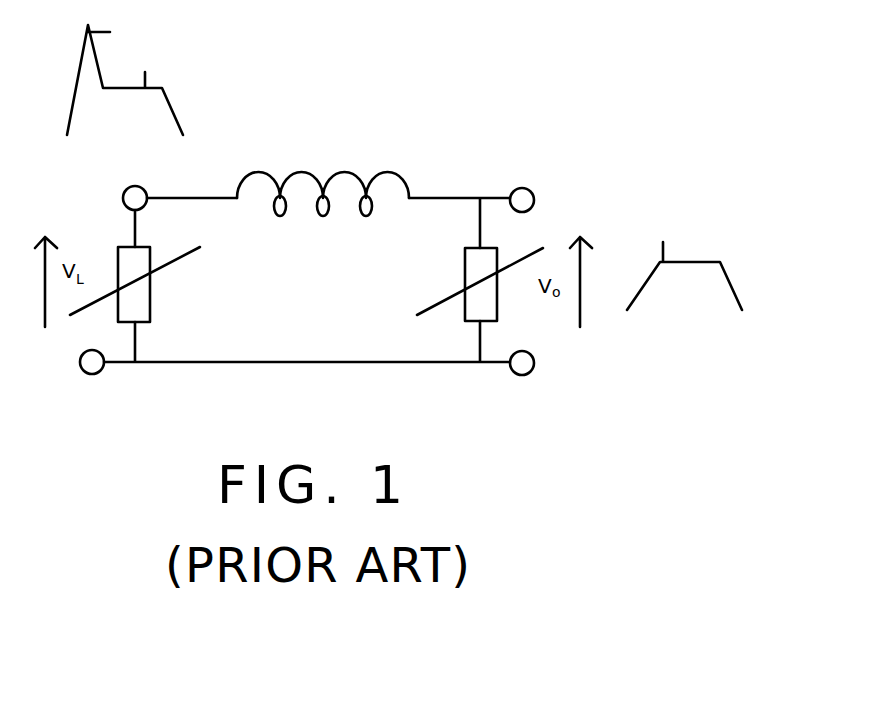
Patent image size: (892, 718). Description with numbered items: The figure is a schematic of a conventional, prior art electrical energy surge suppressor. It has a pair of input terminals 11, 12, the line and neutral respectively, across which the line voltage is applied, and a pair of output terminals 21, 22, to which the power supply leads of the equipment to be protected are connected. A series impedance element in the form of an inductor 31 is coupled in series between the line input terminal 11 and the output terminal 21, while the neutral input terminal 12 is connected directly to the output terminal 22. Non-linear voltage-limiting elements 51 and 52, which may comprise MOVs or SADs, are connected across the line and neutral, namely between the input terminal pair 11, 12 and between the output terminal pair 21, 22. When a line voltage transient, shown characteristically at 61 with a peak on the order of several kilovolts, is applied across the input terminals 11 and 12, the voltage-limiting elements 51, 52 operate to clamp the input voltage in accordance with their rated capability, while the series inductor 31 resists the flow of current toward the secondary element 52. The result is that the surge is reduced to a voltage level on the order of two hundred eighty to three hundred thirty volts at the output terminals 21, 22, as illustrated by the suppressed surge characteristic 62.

The input terminal 11 is at (123, 189).
The input terminal 12 is at (92, 375).
The output terminal 21 is at (522, 188).
The output terminal 22 is at (535, 363).
The inductor 31 is at (333, 172).
The voltage-limiting element 51 is at (152, 293).
The voltage-limiting element 52 is at (463, 267).
The line voltage transient 61 is at (172, 108).
The suppressed surge characteristic 62 is at (732, 288).